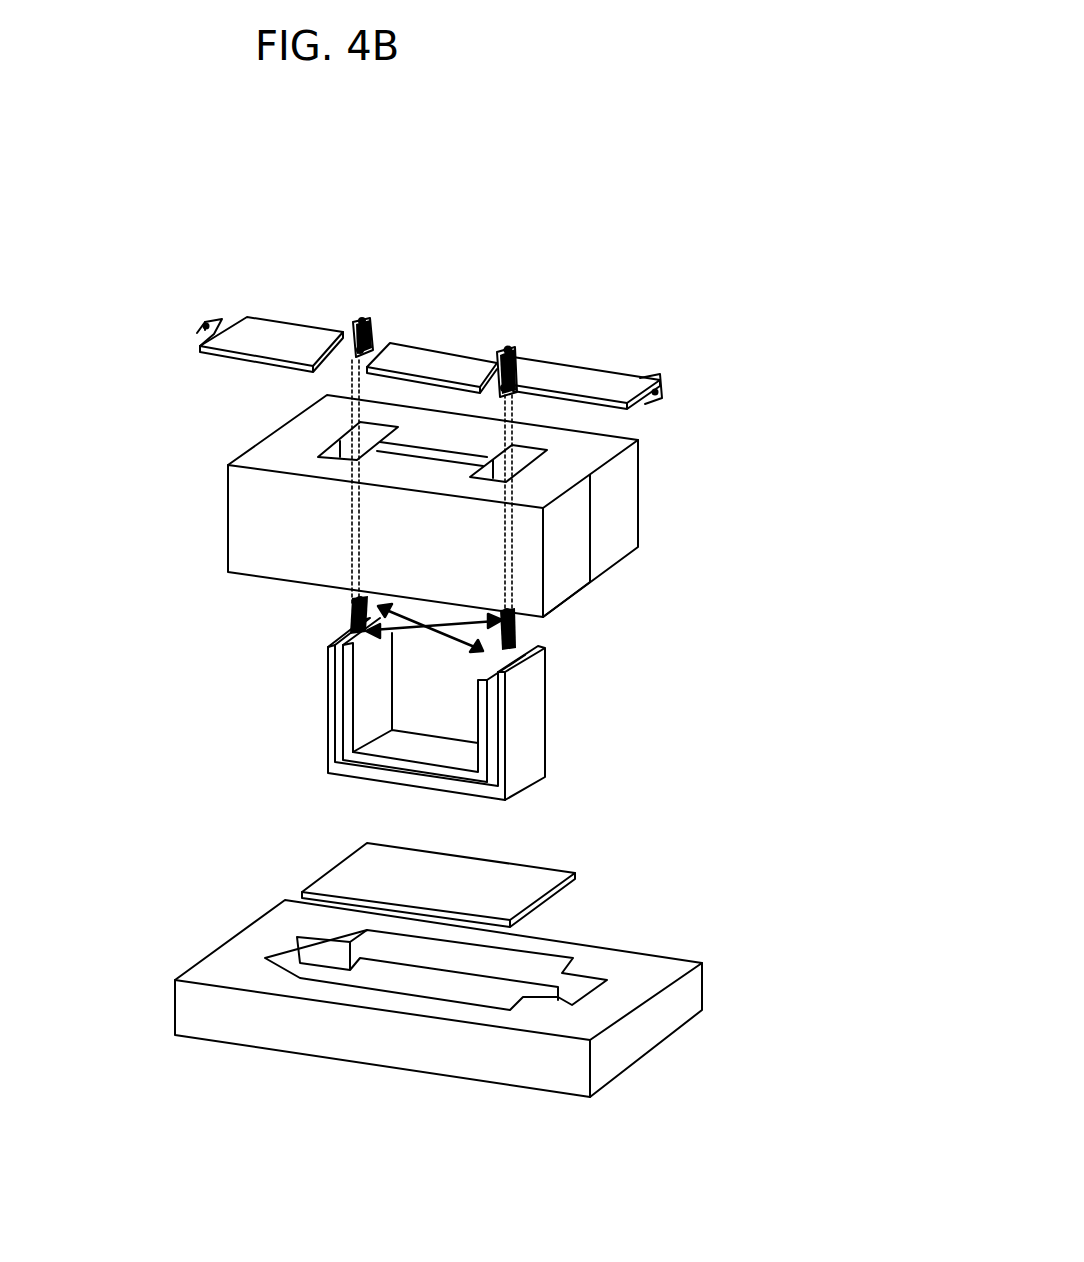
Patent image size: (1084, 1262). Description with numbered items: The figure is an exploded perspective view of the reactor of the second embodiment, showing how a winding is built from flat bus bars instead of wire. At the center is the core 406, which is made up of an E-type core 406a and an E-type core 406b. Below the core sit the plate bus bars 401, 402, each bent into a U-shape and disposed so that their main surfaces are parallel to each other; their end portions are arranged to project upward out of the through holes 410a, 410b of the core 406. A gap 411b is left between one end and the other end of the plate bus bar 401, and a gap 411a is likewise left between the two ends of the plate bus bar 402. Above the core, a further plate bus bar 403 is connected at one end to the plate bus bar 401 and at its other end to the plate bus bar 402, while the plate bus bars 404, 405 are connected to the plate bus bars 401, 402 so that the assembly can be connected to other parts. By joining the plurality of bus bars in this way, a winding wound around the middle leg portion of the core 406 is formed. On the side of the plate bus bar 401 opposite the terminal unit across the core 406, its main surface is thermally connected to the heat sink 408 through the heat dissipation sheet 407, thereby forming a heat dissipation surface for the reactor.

The plate bus bar 401 is at (325, 711).
The plate bus bar 402 is at (355, 729).
The plate bus bar 403 is at (442, 362).
The plate bus bar 404 is at (278, 333).
The plate bus bar 405 is at (598, 377).
The core 406 is at (505, 540).
The E-type core 406a is at (565, 572).
The E-type core 406b is at (628, 507).
The heat dissipation sheet 407 is at (500, 873).
The heat sink 408 is at (643, 982).
The through hole 410a is at (328, 448).
The through hole 410b is at (547, 450).
The gap 411a is at (422, 633).
The gap 411b is at (455, 645).